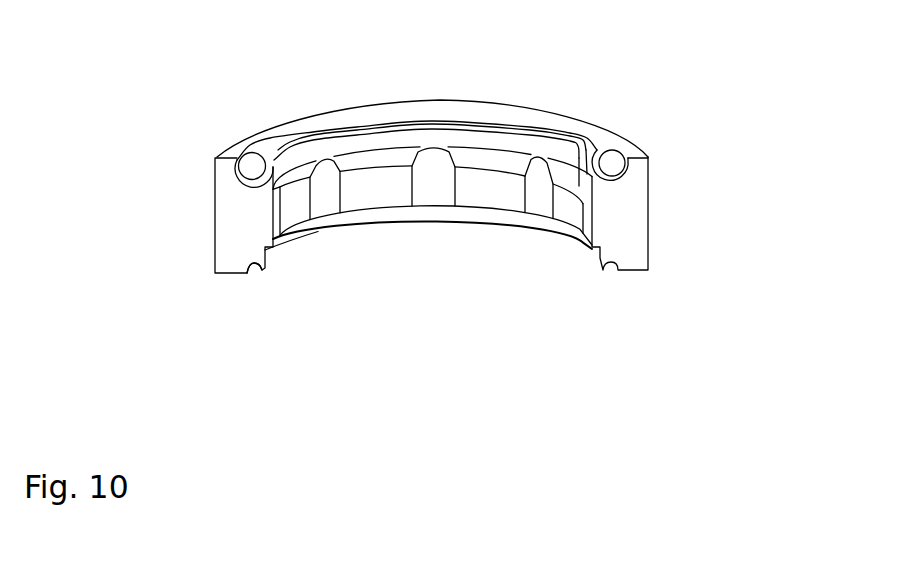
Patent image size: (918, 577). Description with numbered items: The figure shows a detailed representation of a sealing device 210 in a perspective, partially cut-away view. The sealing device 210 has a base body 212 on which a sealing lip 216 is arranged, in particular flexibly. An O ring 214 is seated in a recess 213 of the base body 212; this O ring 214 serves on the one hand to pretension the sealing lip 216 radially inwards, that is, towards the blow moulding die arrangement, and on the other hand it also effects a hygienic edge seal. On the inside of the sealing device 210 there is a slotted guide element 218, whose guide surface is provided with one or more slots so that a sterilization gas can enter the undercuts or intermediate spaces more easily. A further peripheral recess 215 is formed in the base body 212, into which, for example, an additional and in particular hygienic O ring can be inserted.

The sealing device 210 is at (449, 231).
The base body 212 is at (627, 240).
The recess 213 is at (620, 178).
The O ring 214 is at (611, 135).
The peripheral recess 215 is at (253, 274).
The sealing lip 216 is at (319, 137).
The slotted guide element 218 is at (493, 191).